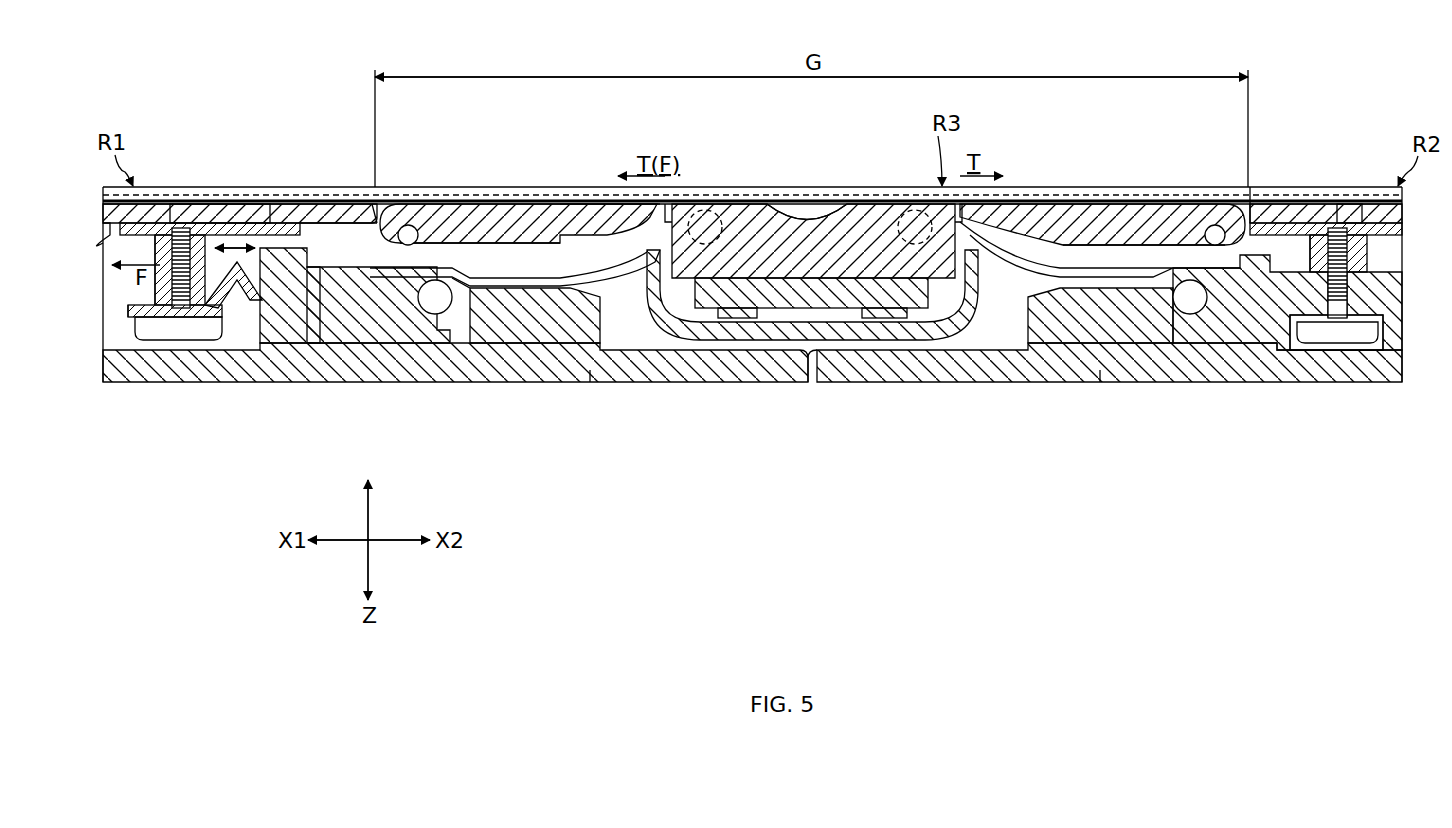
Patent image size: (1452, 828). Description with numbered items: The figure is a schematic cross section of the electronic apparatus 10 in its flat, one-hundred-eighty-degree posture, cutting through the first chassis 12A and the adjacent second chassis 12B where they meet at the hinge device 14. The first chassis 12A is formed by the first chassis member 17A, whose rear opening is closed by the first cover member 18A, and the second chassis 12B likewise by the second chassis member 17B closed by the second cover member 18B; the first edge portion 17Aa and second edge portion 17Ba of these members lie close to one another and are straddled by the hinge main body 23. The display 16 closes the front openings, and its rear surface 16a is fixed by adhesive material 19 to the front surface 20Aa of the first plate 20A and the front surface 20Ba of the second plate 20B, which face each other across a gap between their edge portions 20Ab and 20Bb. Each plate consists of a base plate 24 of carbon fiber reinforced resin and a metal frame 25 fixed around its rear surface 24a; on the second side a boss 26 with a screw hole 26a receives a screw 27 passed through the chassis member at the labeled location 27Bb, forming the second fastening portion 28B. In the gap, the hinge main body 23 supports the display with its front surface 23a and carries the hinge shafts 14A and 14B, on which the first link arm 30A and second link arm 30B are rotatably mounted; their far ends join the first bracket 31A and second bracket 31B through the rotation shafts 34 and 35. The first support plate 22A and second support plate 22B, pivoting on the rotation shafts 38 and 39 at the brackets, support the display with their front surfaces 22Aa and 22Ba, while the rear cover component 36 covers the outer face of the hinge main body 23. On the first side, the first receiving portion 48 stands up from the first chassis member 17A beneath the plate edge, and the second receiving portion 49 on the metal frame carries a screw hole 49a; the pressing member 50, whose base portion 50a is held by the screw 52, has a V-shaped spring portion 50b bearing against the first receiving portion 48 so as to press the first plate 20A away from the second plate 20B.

The electronic apparatus 10 is at (752, 209).
The first chassis 12A is at (530, 415).
The second chassis 12B is at (1098, 415).
The hinge device 14 is at (672, 345).
The first hinge shaft 14A is at (712, 212).
The second hinge shaft 14B is at (912, 212).
The display 16 is at (438, 186).
The rear surface of display 16a is at (585, 203).
The first chassis member 17A is at (600, 375).
The first edge portion 17Aa is at (812, 382).
The second chassis member 17B is at (1020, 375).
The second edge portion 17Ba is at (808, 370).
The first cover member 18A is at (322, 345).
The second cover member 18B is at (1345, 352).
The adhesive material 19 is at (160, 235).
The first plate 20A is at (283, 112).
The front surface of first plate 20Aa is at (320, 203).
The edge portion of first plate 20Ab is at (345, 203).
The second plate 20B is at (1392, 112).
The front surface of second plate 20Ba is at (1330, 203).
The edge portion of second plate 20Bb is at (1268, 186).
The first support plate 22A is at (512, 203).
The front surface of first support plate 22Aa is at (490, 205).
The second support plate 22B is at (1100, 203).
The front surface of second support plate 22Ba is at (1070, 205).
The hinge main body 23 is at (843, 204).
The front surface of hinge main body 23a is at (800, 220).
The base plate 24 is at (275, 203).
The rear surface of base plate 24a is at (105, 240).
The metal frame 25 is at (243, 222).
The boss 26 is at (1372, 252).
The screw hole 26a is at (1335, 203).
The screw 27 is at (1372, 338).
The nut flange 27Bb is at (1345, 352).
The second fastening portion 28B is at (1298, 352).
The first link arm 30A is at (600, 268).
The second link arm 30B is at (1030, 275).
The first bracket 31A is at (485, 345).
The second bracket 31B is at (1140, 345).
The rotation shaft 34 is at (432, 305).
The rotation shaft 35 is at (1190, 305).
The rear cover component 36 is at (745, 320).
The rotation shaft 38 is at (408, 225).
The rotation shaft 39 is at (1215, 225).
The first receiving portion 48 is at (255, 345).
The second receiving portion 49 is at (190, 235).
The screw hole 49a is at (172, 228).
The pressing member 50 is at (127, 320).
The base portion 50a is at (160, 318).
The spring portion 50b is at (235, 312).
The screw 52 is at (190, 320).